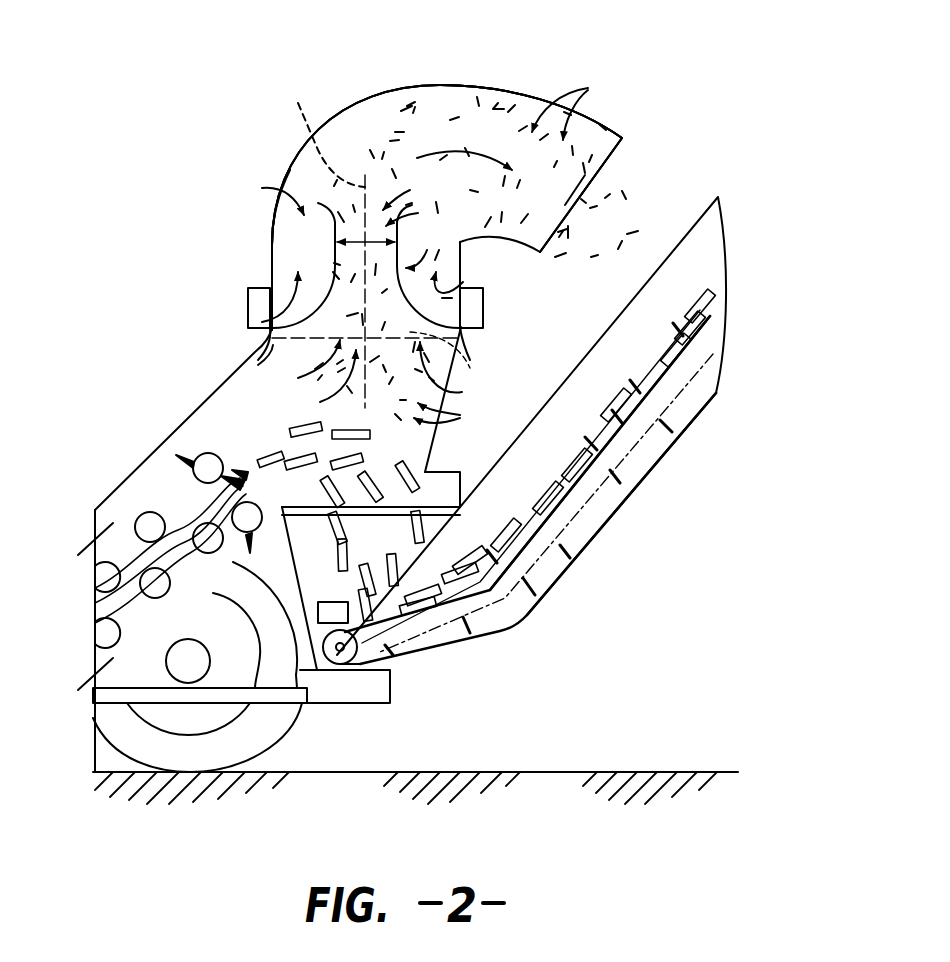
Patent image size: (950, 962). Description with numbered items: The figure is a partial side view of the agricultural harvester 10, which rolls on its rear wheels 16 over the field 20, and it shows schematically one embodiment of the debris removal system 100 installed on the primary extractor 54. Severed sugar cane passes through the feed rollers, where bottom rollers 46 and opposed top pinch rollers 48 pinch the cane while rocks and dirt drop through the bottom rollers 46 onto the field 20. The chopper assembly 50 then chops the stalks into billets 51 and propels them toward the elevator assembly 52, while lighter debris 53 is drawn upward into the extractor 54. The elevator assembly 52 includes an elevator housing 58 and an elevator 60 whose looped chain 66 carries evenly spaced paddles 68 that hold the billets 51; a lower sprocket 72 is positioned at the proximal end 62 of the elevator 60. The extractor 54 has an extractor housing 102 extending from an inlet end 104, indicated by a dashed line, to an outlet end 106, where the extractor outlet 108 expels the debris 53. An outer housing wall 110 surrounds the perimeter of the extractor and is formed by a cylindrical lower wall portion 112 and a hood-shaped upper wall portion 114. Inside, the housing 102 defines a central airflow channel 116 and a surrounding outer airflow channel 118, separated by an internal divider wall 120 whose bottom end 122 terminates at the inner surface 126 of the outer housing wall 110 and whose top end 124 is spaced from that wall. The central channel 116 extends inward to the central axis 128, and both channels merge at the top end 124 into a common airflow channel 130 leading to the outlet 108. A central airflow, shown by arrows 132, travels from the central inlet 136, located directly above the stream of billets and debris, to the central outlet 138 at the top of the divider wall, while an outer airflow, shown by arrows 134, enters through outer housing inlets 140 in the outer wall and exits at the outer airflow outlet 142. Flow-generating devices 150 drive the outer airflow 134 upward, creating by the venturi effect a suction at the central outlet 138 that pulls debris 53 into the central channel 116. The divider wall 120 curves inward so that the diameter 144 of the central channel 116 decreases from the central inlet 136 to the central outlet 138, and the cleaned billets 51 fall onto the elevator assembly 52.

The harvester 10 is at (60, 520).
The rear wheels 16 is at (228, 742).
The field 20 is at (585, 772).
The bottom rollers 46 is at (100, 637).
The top pinch rollers 48 is at (97, 575).
The chopper assembly 50 is at (207, 440).
The billets 51 is at (405, 442).
The elevator assembly 52 is at (640, 500).
The debris 53 is at (518, 251).
The primary extractor 54 is at (347, 82).
The elevator housing 58 is at (672, 450).
The elevator 60 is at (695, 350).
The proximal end 62 is at (410, 668).
The looped chain 66 is at (603, 538).
The paddles 68 is at (678, 330).
The lower sprocket 72 is at (338, 665).
The debris removal system 100 is at (165, 148).
The extractor housing 102 is at (292, 165).
The inlet end 104 is at (470, 372).
The outlet end 106 is at (615, 158).
The extractor outlet 108 is at (602, 182).
The outer housing wall 110 is at (292, 165).
The lower wall portion 112 is at (270, 262).
The upper wall portion 114 is at (428, 86).
The central airflow channel 116 is at (407, 317).
The outer airflow channel 118 is at (320, 256).
The internal divider wall 120 is at (428, 266).
The bottom end 122 is at (252, 363).
The top end 124 is at (334, 222).
The vane lower edge 126 is at (457, 252).
The central axis 128 is at (324, 132).
The common airflow channel 130 is at (497, 129).
The central airflow 132 is at (381, 373).
The outer airflow 134 is at (268, 298).
The central inlet 136 is at (318, 384).
The central outlet 138 is at (419, 193).
The outer housing inlets 140 is at (268, 326).
The outer airflow outlet 142 is at (262, 195).
The diameter 144 is at (423, 212).
The flow-generating devices 150 is at (248, 305).